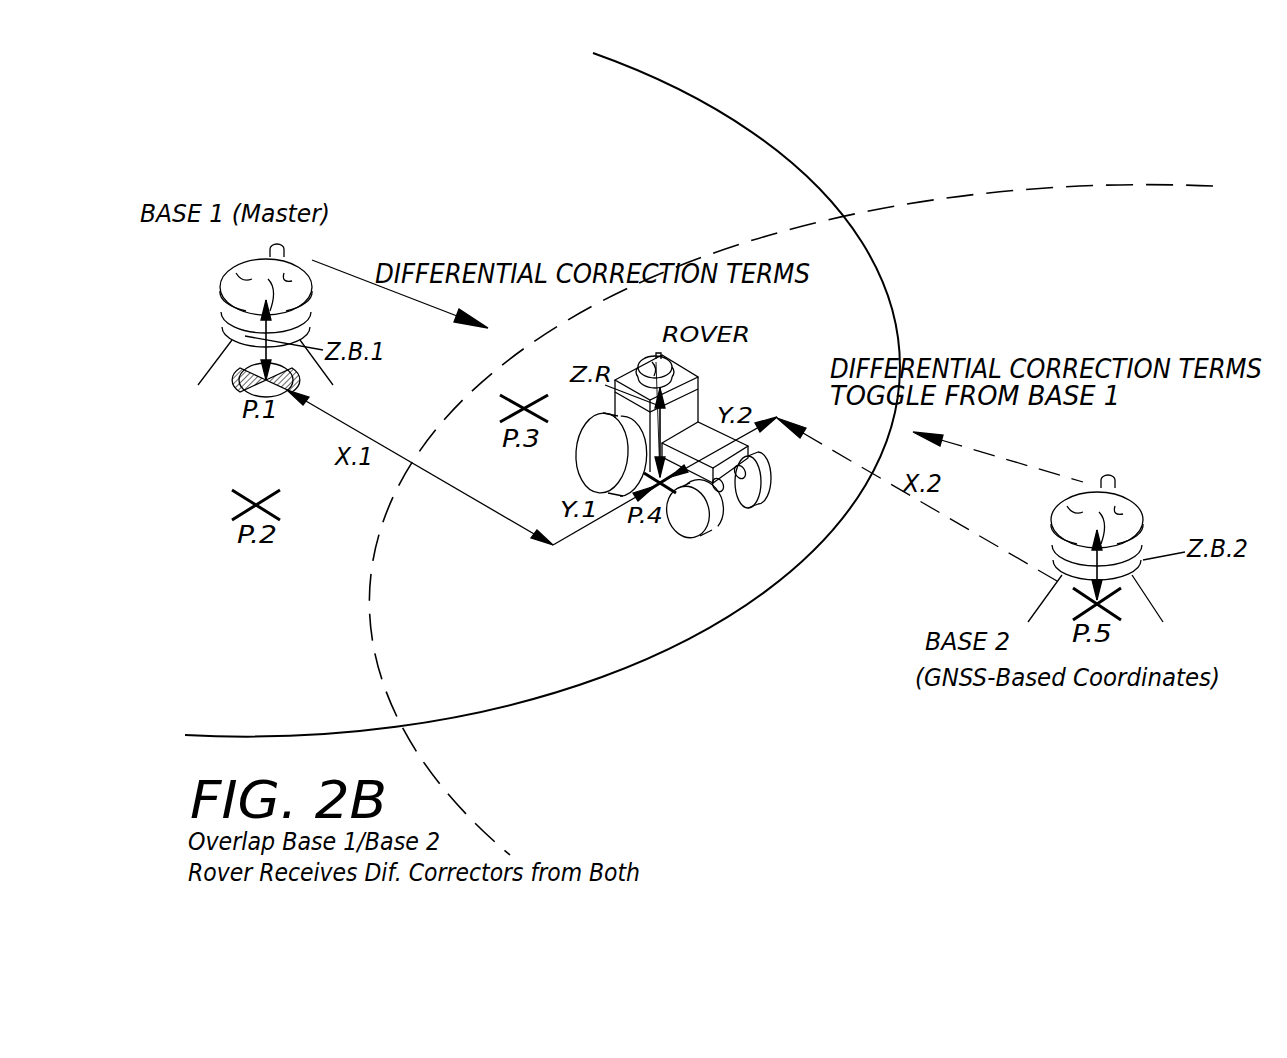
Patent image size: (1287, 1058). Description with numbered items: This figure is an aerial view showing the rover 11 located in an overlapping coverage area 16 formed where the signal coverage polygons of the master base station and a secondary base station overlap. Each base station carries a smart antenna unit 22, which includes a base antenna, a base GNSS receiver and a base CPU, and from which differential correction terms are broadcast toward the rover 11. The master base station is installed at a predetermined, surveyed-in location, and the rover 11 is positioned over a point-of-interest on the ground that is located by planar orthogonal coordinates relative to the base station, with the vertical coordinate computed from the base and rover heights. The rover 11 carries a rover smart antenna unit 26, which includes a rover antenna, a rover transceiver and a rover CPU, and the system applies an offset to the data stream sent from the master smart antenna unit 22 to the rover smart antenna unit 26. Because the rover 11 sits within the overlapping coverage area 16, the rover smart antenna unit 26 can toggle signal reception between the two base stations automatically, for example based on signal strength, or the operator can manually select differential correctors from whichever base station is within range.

The rover 11 is at (672, 433).
The overlapping coverage area 16 is at (513, 637).
The smart antenna unit 22 is at (233, 272).
The rover smart antenna unit 26 is at (645, 366).